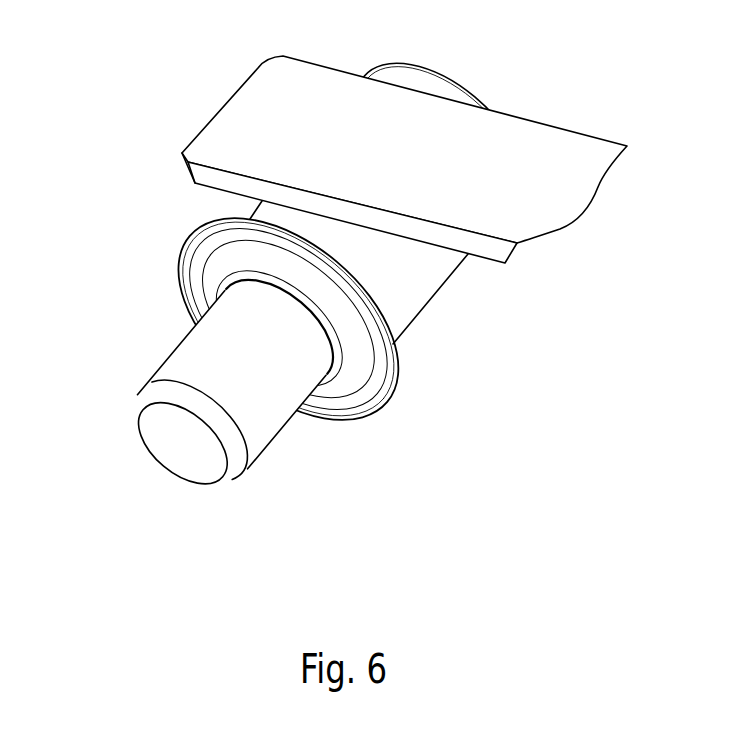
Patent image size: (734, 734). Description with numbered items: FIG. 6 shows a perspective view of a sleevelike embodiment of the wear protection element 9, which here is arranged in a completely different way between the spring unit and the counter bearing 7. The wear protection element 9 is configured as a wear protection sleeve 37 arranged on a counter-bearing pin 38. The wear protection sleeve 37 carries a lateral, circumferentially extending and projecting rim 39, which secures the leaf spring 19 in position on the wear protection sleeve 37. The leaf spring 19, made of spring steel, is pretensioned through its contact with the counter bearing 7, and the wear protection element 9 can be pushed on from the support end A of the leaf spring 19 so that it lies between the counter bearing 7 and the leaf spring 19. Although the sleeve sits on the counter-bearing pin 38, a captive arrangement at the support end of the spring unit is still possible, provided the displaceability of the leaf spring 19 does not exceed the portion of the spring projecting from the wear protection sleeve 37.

The support end A is at (355, 280).
The counter bearing 7 is at (355, 280).
The wear protection element 9 is at (474, 98).
The leaf spring 19 is at (550, 188).
The wear protection sleeve 37 is at (402, 283).
The counter-bearing pin 38 is at (282, 355).
The rim 39 is at (372, 350).